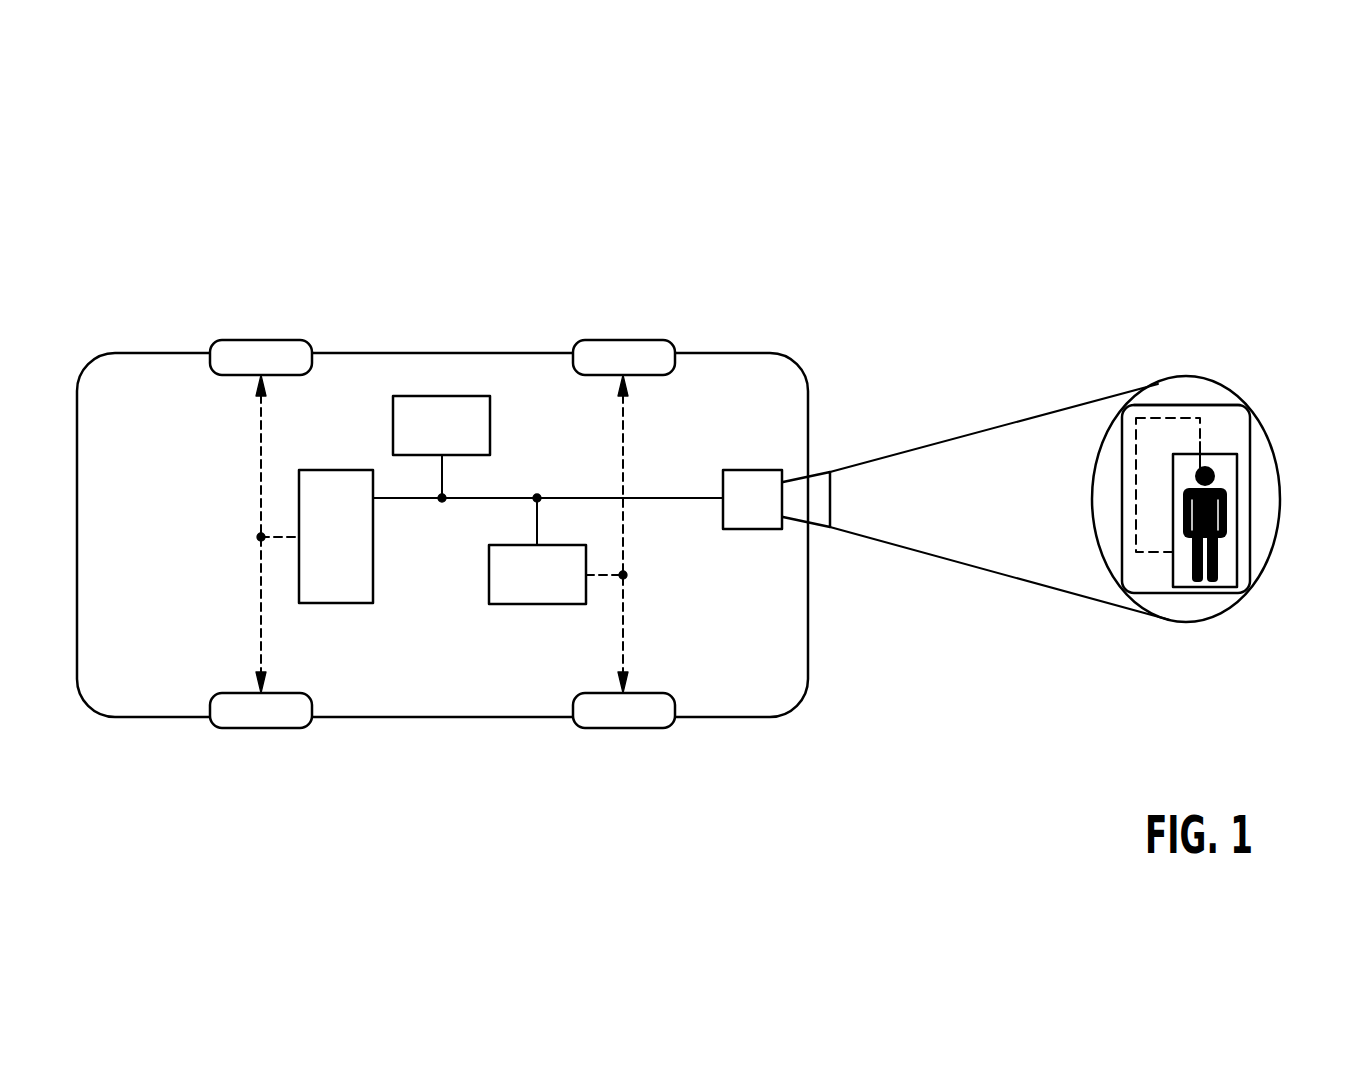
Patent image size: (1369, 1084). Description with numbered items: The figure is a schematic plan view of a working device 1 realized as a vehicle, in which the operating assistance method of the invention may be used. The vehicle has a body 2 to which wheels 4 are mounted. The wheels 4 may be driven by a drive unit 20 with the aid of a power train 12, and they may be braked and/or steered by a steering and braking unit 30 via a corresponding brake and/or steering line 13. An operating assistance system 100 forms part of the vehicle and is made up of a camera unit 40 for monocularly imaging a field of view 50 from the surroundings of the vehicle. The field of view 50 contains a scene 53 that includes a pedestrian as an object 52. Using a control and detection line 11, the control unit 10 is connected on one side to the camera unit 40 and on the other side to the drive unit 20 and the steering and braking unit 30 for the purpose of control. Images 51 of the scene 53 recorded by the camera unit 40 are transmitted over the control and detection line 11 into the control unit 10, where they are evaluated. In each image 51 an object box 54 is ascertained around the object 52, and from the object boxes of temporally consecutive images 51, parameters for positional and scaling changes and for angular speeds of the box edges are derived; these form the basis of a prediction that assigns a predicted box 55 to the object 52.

The working device 1 is at (183, 270).
The body 2 is at (406, 352).
The wheels 4 is at (270, 352).
The control unit 10 is at (472, 410).
The control and detection line 11 is at (442, 480).
The power train 12 is at (261, 467).
The brake and/or steering line 13 is at (623, 607).
The drive unit 20 is at (340, 602).
The steering and braking unit 30 is at (500, 602).
The camera unit 40 is at (750, 470).
The field of view 50 is at (1200, 377).
The images 51 is at (1220, 405).
The object 52 is at (1213, 575).
The scene 53 is at (1180, 403).
The object box 54 is at (1237, 465).
The predicted box 55 is at (1200, 442).
The operating assistance system 100 is at (705, 218).